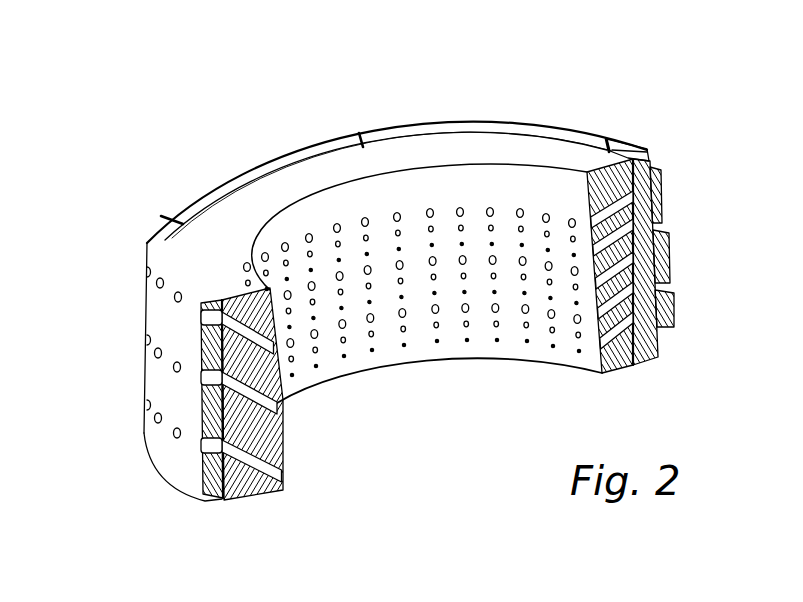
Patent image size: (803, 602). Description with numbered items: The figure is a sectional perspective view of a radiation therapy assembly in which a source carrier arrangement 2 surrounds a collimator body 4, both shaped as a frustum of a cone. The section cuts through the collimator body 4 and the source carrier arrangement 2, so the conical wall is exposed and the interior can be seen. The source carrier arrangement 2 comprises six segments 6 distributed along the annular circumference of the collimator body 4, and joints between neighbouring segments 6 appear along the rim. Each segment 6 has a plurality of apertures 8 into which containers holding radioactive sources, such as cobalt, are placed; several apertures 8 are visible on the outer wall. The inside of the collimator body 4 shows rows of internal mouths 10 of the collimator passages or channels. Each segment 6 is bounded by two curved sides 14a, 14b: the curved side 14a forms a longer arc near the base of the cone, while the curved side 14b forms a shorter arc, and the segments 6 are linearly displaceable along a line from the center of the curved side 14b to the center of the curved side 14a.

The source carrier arrangement 2 is at (490, 122).
The collimator body 4 is at (650, 360).
The segment 6 is at (234, 168).
The aperture 8 is at (175, 439).
The internal mouth 10 is at (404, 322).
The curved side 14a is at (147, 447).
The curved side 14b is at (147, 265).